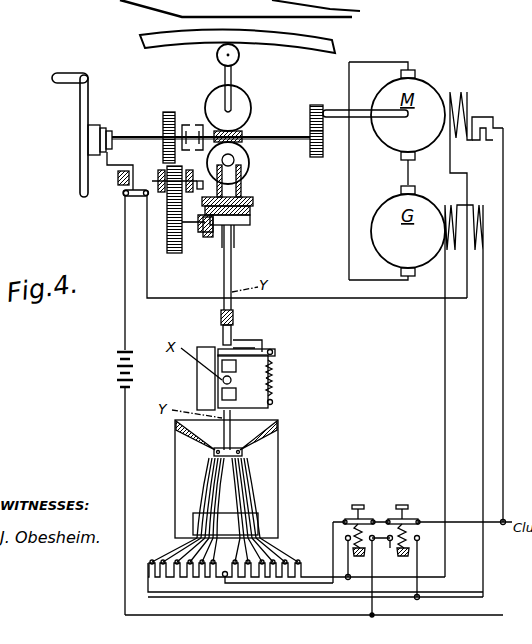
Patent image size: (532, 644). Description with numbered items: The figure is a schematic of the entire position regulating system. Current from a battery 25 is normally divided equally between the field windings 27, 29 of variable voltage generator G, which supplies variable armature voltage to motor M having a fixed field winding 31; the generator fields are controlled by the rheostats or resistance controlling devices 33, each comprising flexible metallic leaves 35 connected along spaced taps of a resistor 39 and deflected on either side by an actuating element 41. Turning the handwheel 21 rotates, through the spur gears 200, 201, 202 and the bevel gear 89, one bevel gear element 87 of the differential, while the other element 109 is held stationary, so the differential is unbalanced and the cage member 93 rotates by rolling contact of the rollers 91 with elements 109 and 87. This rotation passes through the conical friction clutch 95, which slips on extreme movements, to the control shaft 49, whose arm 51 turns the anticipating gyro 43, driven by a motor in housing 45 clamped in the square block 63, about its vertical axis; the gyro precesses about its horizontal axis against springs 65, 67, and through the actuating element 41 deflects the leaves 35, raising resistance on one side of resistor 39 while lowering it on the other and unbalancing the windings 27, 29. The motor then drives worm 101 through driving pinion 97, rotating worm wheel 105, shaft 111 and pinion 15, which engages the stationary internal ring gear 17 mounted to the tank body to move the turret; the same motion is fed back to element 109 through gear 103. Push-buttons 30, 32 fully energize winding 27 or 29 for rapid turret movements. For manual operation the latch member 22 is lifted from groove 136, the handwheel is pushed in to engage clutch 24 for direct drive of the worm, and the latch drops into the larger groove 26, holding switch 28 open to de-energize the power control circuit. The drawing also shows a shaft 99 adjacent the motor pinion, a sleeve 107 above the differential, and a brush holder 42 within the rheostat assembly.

The internal stationary ring gear 17 is at (162, 32).
The spur gear 15 is at (240, 56).
The shaft 111 is at (225, 78).
The worm wheel 105 is at (248, 100).
The worm 101 is at (251, 115).
The gear 103 is at (250, 163).
The driving pinion 97 is at (314, 106).
The shaft 99 is at (312, 156).
The handwheel 21 is at (80, 164).
The groove 26 is at (103, 126).
The groove 136 is at (109, 131).
The spur gear 200 is at (163, 118).
The clutch 24 is at (199, 120).
The spur gear 201 is at (188, 148).
The spur gear 202 is at (176, 255).
The latch member 22 is at (110, 153).
The switch 28 is at (130, 196).
The battery 25 is at (118, 364).
The sleeve 107 is at (241, 190).
The element of the differential 109 is at (252, 203).
The rollers 91 is at (205, 201).
The cage member 93 is at (252, 221).
The bevel gear element 87 is at (233, 223).
The conical friction clutch 95 is at (233, 241).
The bevel gear 89 is at (206, 237).
The control shaft 49 is at (231, 269).
The arm 51 is at (250, 339).
The square block 63 is at (222, 391).
The spring 65 is at (272, 353).
The anticipating gyro 43 is at (286, 383).
The housing 45 is at (272, 381).
The spring 67 is at (273, 401).
The actuating element 41 is at (232, 416).
The rheostats or resistance controlling devices 33 is at (175, 488).
The flexible metallic leaves 35 is at (202, 465).
The brush holder 42 is at (250, 453).
The resistor 39 is at (208, 573).
The push-button 30 is at (358, 505).
The push-button 32 is at (402, 505).
The fixed field winding 31 is at (468, 106).
The field winding 27 is at (455, 206).
The field winding 29 is at (490, 199).